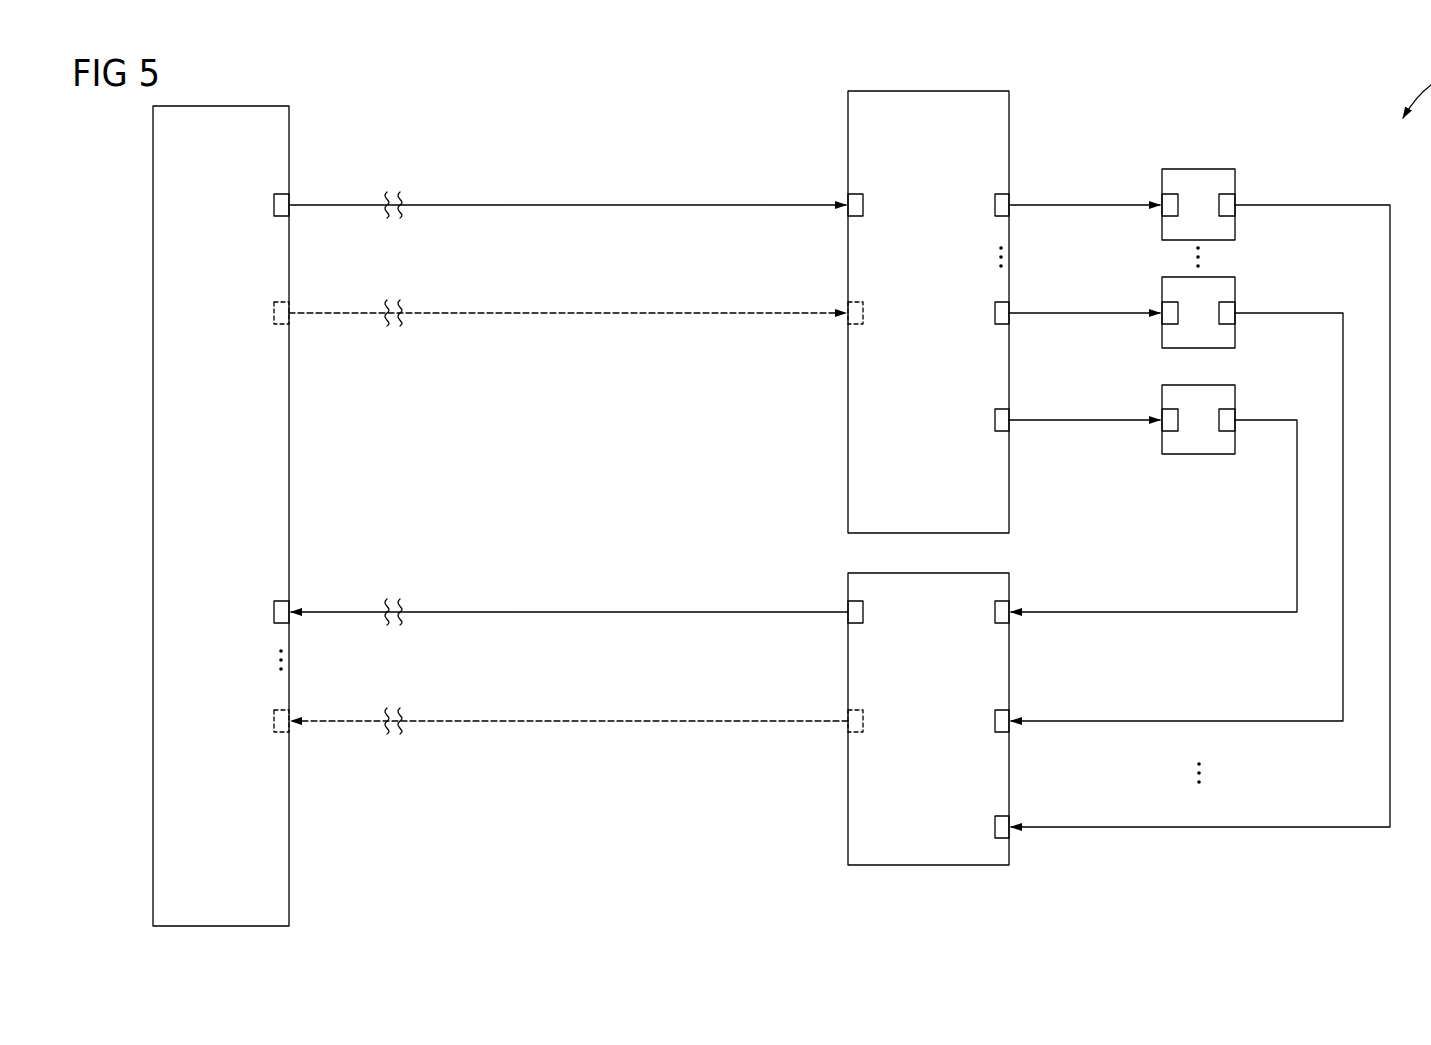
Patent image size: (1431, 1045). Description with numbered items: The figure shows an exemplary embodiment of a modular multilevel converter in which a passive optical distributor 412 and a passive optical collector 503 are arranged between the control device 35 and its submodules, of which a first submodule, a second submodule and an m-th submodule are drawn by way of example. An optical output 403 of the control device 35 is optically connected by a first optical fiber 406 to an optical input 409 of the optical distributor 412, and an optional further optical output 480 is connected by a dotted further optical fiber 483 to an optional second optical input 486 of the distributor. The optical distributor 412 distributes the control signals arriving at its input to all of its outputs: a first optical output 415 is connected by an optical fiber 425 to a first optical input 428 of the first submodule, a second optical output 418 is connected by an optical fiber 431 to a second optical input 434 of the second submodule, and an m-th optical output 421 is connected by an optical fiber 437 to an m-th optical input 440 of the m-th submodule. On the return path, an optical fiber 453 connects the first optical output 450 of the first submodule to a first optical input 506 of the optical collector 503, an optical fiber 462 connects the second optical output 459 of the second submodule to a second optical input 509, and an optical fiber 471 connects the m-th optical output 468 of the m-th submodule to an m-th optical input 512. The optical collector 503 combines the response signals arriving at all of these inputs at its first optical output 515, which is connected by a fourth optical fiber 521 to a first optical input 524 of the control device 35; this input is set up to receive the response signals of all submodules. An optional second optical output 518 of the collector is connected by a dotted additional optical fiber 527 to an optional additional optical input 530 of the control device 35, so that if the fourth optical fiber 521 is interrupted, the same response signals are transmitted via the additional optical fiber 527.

The control device 35 is at (153, 525).
The optical output 403 is at (274, 208).
The further optical output 480 is at (274, 316).
The first optical input 524 is at (274, 614).
The additional optical input 530 is at (274, 723).
The first optical fiber 406 is at (612, 205).
The further optical fiber 483 is at (612, 313).
The fourth optical fiber 521 is at (612, 612).
The additional optical fiber 527 is at (612, 721).
The optical distributor 412 is at (848, 422).
The optical input 409 is at (863, 206).
The second optical input 486 is at (863, 314).
The m-th optical output 421 is at (994, 206).
The second optical output 418 is at (994, 314).
The first optical output 415 is at (994, 421).
The optical collector 503 is at (848, 828).
The first optical output 515 is at (863, 613).
The second optical output 518 is at (863, 722).
The first optical input 506 is at (994, 613).
The second optical input 509 is at (994, 722).
The m-th optical input 512 is at (994, 828).
The m-th optical input 440 is at (1166, 200).
The m-th optical output 468 is at (1232, 200).
The second optical input 434 is at (1166, 309).
The second optical output 459 is at (1232, 309).
The first optical input 428 is at (1166, 417).
The first optical output 450 is at (1232, 417).
The optical fiber 437 is at (1058, 205).
The optical fiber 431 is at (1058, 313).
The optical fiber 425 is at (1058, 420).
The optical fiber 453 is at (1058, 612).
The optical fiber 462 is at (1058, 721).
The optical fiber 471 is at (1058, 827).